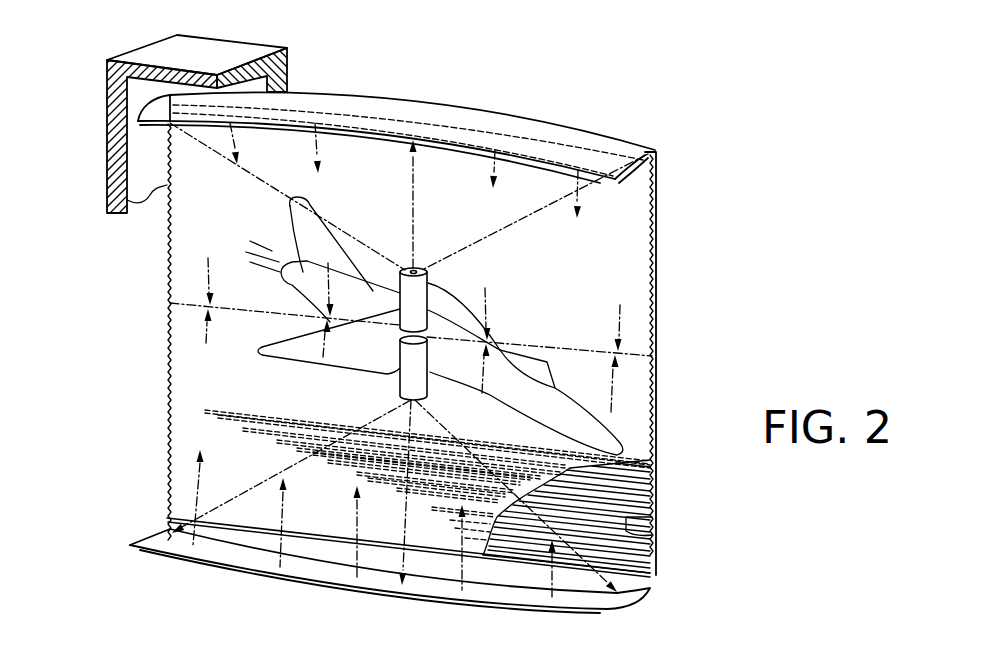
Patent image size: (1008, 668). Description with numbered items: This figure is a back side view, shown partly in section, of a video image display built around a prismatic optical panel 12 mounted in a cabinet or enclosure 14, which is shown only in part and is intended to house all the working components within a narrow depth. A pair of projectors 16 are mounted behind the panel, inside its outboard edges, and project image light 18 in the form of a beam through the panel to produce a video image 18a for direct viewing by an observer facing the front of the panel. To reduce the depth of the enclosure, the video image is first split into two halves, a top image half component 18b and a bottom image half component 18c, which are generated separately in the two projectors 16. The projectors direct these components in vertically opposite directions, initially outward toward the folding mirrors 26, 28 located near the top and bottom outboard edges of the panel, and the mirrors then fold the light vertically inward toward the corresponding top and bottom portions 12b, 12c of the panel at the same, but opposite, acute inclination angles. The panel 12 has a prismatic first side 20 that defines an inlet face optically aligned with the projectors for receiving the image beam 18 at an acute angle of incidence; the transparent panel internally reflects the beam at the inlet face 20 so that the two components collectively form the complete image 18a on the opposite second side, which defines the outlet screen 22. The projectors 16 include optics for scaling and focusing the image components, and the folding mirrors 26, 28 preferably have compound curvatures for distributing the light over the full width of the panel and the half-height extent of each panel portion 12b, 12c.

The prismatic optical panel 12 is at (670, 294).
The top portion of the panel 12b is at (234, 215).
The bottom portion of the panel 12c is at (264, 472).
The cabinet or enclosure 14 is at (107, 105).
The projectors 16 is at (430, 282).
The image light 18 is at (415, 233).
The video image 18a is at (547, 361).
The top image half component 18b is at (325, 138).
The bottom image half component 18c is at (283, 540).
The prismatic first side 20 is at (658, 540).
The outlet screen 22 is at (658, 487).
The folding mirror 26 is at (537, 132).
The folding mirror 28 is at (645, 600).